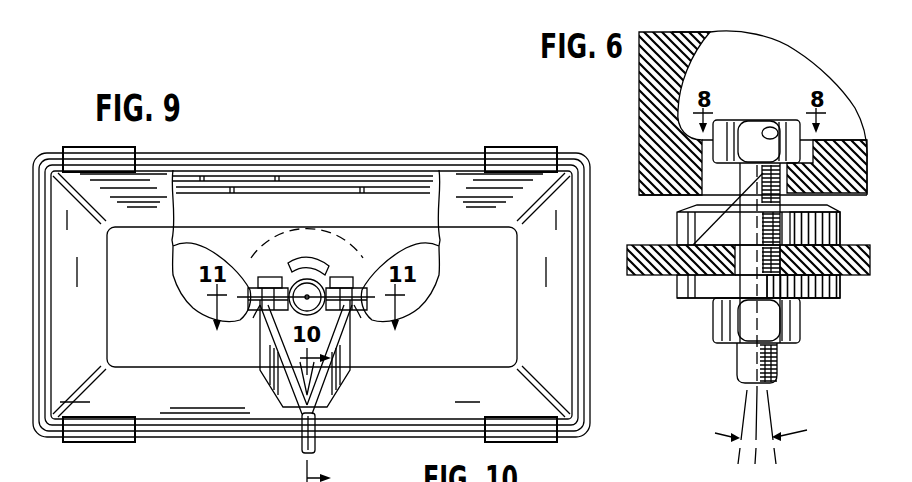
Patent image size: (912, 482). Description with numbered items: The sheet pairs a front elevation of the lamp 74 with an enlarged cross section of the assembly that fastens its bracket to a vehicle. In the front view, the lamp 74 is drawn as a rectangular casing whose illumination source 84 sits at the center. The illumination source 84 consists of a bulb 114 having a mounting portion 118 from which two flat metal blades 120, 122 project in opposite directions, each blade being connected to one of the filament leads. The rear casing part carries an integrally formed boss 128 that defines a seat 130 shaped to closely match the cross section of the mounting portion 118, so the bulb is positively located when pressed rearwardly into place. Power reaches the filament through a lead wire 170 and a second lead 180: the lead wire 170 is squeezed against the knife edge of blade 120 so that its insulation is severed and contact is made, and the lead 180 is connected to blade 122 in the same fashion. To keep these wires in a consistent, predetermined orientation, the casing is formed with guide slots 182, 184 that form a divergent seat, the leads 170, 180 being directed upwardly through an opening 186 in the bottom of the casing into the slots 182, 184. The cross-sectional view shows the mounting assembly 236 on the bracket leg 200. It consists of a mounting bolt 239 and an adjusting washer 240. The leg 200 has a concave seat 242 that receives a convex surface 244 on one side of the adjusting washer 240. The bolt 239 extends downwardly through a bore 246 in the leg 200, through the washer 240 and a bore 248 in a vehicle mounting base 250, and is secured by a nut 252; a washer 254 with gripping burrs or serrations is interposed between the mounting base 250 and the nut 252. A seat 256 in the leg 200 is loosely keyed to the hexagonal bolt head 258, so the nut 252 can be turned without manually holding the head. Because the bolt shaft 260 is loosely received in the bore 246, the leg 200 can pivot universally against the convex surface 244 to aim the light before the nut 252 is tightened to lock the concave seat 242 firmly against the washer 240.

In FIG. 9, the lamp 74 is at (275, 150).
In FIG. 9, the illumination source 84 is at (333, 267).
In FIG. 9, the bulb 114 is at (310, 263).
In FIG. 9, the mounting portion 118 is at (420, 246).
In FIG. 9, the blade 120 is at (365, 280).
In FIG. 9, the blade 122 is at (249, 288).
In FIG. 9, the boss 128 is at (175, 258).
In FIG. 9, the seat 130 is at (260, 321).
In FIG. 9, the lead wire 170 is at (327, 392).
In FIG. 9, the lead 180 is at (277, 342).
In FIG. 9, the guide slot 182 is at (323, 343).
In FIG. 9, the guide slot 184 is at (293, 357).
In FIG. 9, the opening 186 is at (297, 432).
In FIG. 6, the bracket leg 200 is at (643, 128).
In FIG. 6, the mounting assembly 236 is at (678, 313).
In FIG. 6, the mounting bolt 239 is at (780, 363).
In FIG. 6, the adjusting washer 240 is at (677, 215).
In FIG. 6, the concave seat 242 is at (807, 187).
In FIG. 6, the convex surface 244 is at (747, 117).
In FIG. 6, the bore 246 is at (833, 225).
In FIG. 6, the bore 248 is at (800, 316).
In FIG. 6, the vehicle mounting base 250 is at (647, 250).
In FIG. 6, the nut 252 is at (777, 378).
In FIG. 6, the washer 254 is at (678, 297).
In FIG. 6, the seat 256 is at (782, 123).
In FIG. 6, the hexagonal bolt head 258 is at (750, 122).
In FIG. 6, the bolt shaft 260 is at (688, 268).